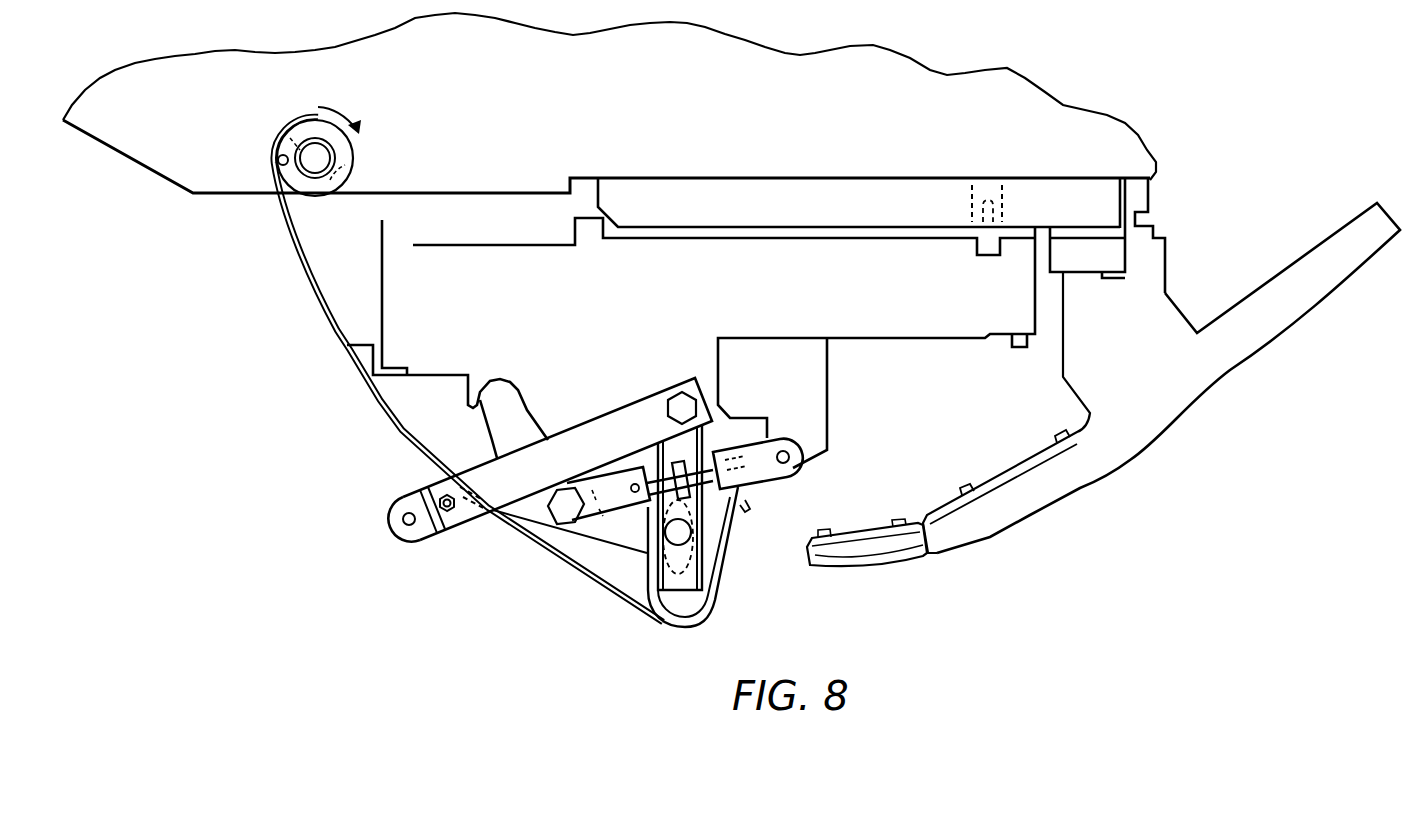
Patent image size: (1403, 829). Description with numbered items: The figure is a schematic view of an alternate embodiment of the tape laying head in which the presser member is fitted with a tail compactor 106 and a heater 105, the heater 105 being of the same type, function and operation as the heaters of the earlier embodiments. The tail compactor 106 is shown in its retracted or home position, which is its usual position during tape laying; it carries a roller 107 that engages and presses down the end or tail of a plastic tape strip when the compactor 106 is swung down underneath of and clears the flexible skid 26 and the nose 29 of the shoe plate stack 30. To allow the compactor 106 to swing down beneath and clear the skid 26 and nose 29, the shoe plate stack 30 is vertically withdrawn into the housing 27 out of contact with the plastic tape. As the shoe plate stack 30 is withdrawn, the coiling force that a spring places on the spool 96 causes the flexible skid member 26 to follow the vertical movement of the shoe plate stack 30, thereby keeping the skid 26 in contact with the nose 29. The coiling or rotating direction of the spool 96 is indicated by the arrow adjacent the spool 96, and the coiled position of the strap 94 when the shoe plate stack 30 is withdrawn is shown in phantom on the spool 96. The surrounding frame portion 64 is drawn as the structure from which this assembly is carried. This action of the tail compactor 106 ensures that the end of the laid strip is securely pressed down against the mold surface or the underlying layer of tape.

The flexible skid 26 is at (727, 557).
The housing 27 is at (600, 530).
The nose 29 is at (660, 625).
The shoe plate stack 30 is at (647, 577).
The frame housing 64 is at (200, 132).
The strap 94 is at (325, 312).
The spool 96 is at (352, 152).
The heater 105 is at (1080, 488).
The tail compactor 106 is at (480, 527).
The roller 107 is at (385, 520).